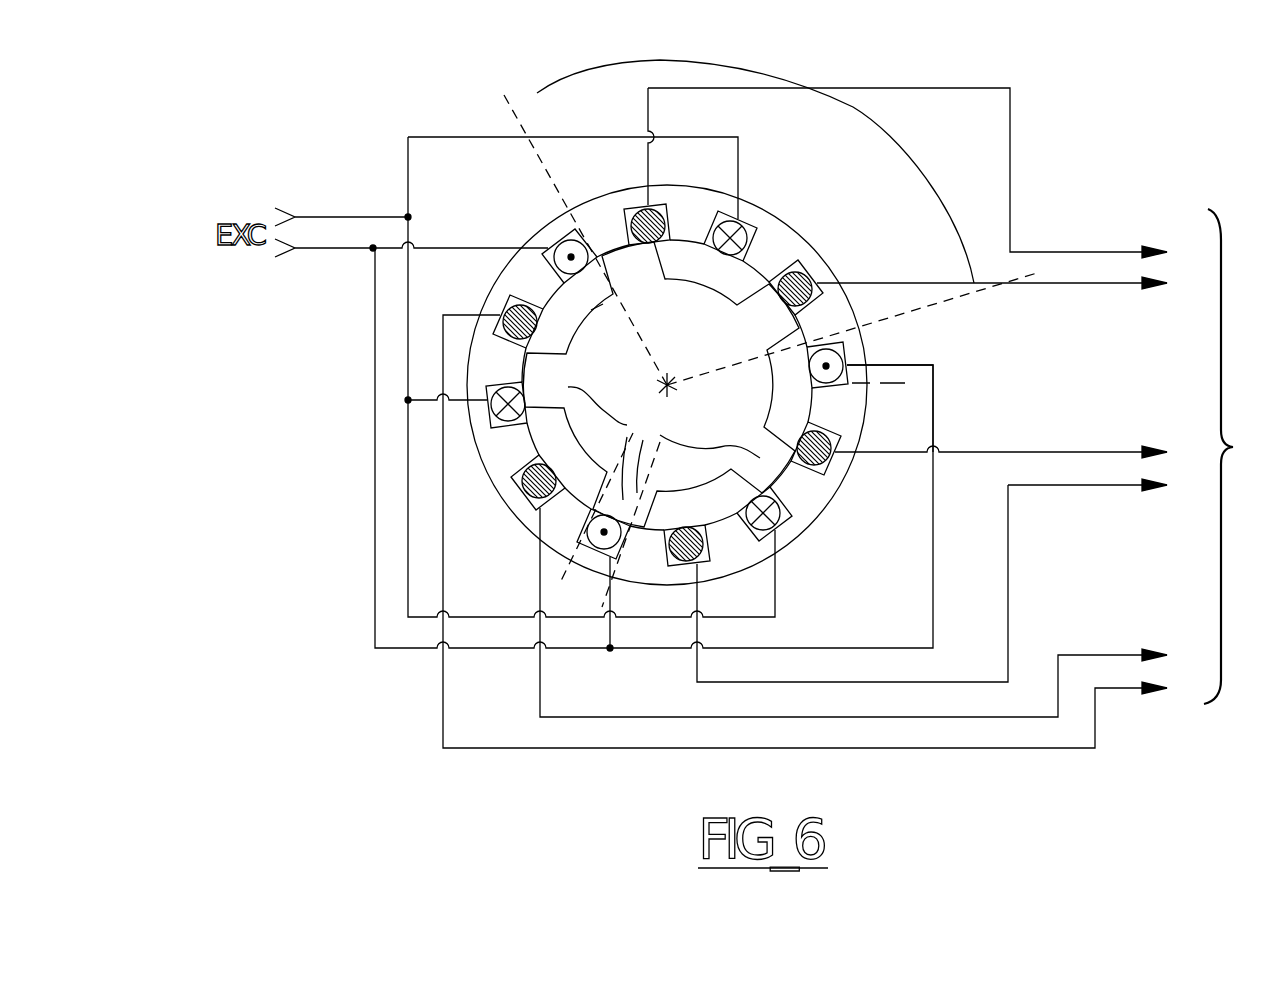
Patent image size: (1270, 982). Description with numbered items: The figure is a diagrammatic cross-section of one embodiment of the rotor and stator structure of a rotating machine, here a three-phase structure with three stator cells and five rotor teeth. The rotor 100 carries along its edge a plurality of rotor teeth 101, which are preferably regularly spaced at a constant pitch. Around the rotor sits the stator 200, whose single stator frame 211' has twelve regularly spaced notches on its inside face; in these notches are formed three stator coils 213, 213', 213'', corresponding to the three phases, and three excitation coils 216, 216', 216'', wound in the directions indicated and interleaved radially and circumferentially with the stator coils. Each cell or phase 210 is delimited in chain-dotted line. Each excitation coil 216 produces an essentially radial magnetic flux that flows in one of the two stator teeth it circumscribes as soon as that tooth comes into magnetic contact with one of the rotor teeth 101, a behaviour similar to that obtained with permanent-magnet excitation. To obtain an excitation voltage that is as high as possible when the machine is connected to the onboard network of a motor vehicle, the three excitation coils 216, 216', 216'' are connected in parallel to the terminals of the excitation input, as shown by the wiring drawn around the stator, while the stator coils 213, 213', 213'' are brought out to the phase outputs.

The rotor 100 is at (720, 346).
The rotor teeth 101 is at (770, 264).
The stator 200 is at (803, 214).
The stator cell 210 is at (876, 100).
The stator frame 211' is at (938, 408).
The stator coil 213 is at (732, 229).
The stator coil 213' is at (795, 522).
The stator coil 213'' is at (496, 391).
The excitation coil 216 is at (637, 208).
The excitation coil 216' is at (854, 449).
The excitation coil 216'' is at (467, 542).